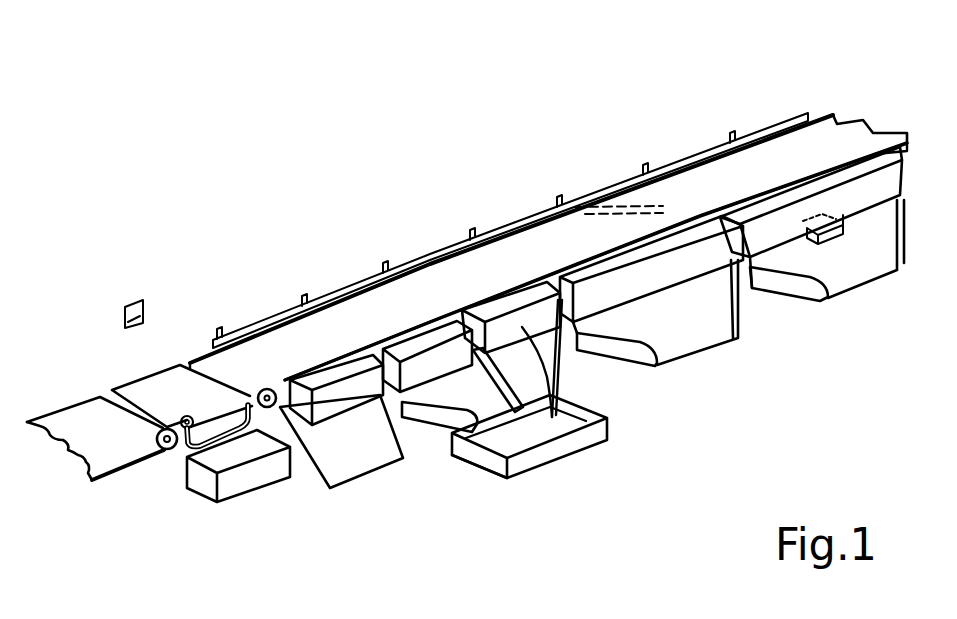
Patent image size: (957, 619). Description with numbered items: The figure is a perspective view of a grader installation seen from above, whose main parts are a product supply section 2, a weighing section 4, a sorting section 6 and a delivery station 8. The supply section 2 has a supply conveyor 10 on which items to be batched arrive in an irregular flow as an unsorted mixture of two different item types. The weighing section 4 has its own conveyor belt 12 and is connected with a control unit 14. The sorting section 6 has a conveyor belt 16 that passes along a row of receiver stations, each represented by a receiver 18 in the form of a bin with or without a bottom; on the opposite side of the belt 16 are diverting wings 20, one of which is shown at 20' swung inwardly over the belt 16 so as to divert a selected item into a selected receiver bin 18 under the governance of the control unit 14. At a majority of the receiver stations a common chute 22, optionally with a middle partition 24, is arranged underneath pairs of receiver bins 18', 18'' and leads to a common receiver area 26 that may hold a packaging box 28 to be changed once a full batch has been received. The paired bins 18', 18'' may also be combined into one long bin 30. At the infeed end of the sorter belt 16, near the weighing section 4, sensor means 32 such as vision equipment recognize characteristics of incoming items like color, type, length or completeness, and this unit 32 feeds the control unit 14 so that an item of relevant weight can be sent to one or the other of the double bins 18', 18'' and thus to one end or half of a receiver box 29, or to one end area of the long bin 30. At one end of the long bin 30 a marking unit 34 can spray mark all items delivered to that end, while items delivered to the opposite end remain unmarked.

The product supply section 2 is at (71, 396).
The weighing section 4 is at (163, 357).
The sorting section 6 is at (462, 212).
The delivery station 8 is at (870, 120).
The supply conveyor 10 is at (147, 392).
The conveyor belt 12 is at (113, 432).
The control unit 14 is at (257, 473).
The conveyor belt 16 is at (525, 257).
The receiver 18 is at (347, 456).
The receiver bin 18' is at (387, 423).
The receiver bin 18'' is at (583, 370).
The diverting wing 20 is at (510, 230).
The diverting wing 20' is at (619, 164).
The common chute 22 is at (550, 431).
The middle partition 24 is at (482, 436).
The common receiver area 26 is at (618, 435).
The packaging box 28 is at (667, 338).
The receiver box 29 is at (518, 465).
The long bin 30 is at (643, 282).
The sensor means 32 is at (143, 300).
The marking unit 34 is at (832, 237).